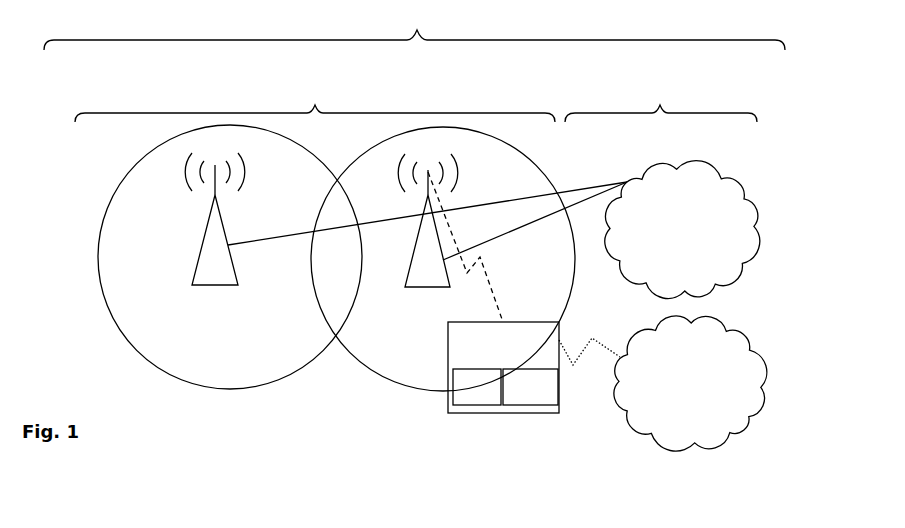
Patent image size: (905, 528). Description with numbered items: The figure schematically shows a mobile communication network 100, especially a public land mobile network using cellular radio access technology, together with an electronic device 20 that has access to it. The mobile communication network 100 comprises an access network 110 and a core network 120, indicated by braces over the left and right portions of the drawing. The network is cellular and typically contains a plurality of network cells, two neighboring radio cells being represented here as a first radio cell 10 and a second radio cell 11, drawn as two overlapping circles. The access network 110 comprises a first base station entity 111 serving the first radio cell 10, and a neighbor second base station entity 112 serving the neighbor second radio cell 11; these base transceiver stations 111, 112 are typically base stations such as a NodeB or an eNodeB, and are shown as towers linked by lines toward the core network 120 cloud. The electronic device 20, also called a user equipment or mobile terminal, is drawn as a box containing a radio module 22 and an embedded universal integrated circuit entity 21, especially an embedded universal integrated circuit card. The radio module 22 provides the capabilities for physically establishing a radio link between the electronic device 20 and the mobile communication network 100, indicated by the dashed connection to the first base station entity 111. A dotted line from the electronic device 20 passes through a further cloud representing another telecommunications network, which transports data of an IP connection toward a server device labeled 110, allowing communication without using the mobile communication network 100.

The mobile communication network 100 is at (414, 27).
The access network 110 is at (756, 326).
The core network 120 is at (662, 190).
The first radio cell 10 is at (366, 369).
The second radio cell 11 is at (153, 369).
The first base station entity 111 is at (512, 238).
The second base station entity 112 is at (406, 219).
The electronic device 20 is at (534, 367).
The embedded universal integrated circuit entity 21 is at (477, 387).
The radio module 22 is at (530, 387).